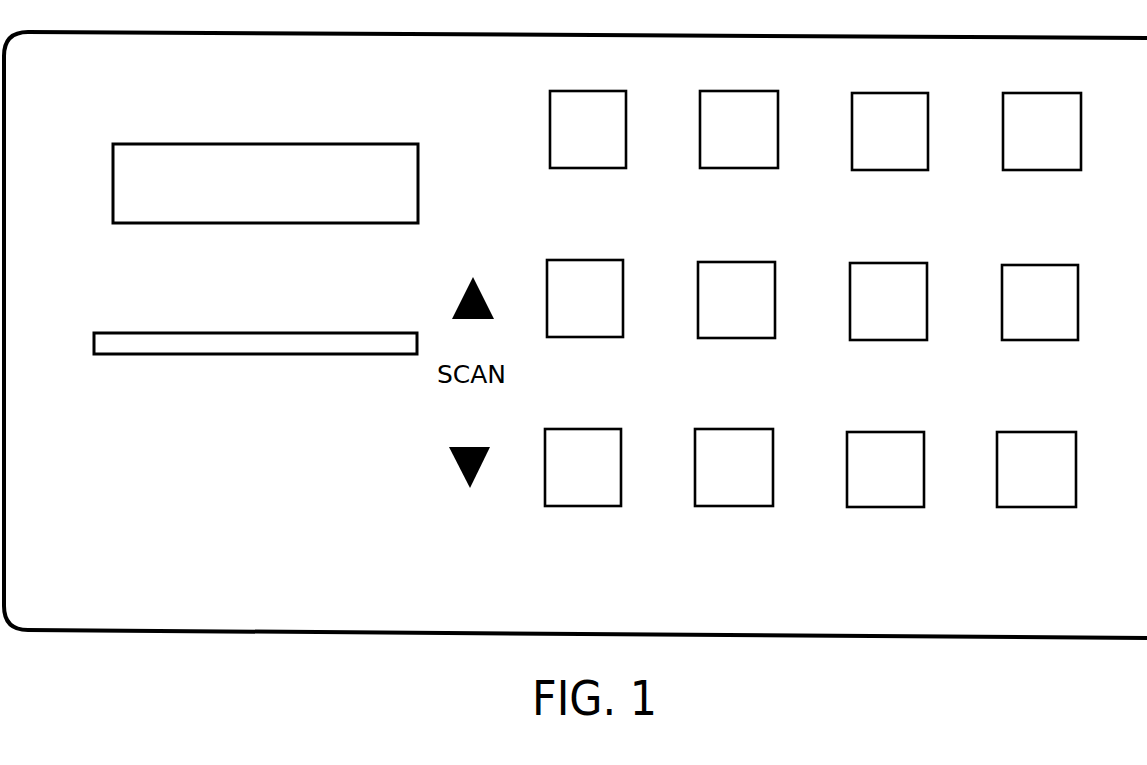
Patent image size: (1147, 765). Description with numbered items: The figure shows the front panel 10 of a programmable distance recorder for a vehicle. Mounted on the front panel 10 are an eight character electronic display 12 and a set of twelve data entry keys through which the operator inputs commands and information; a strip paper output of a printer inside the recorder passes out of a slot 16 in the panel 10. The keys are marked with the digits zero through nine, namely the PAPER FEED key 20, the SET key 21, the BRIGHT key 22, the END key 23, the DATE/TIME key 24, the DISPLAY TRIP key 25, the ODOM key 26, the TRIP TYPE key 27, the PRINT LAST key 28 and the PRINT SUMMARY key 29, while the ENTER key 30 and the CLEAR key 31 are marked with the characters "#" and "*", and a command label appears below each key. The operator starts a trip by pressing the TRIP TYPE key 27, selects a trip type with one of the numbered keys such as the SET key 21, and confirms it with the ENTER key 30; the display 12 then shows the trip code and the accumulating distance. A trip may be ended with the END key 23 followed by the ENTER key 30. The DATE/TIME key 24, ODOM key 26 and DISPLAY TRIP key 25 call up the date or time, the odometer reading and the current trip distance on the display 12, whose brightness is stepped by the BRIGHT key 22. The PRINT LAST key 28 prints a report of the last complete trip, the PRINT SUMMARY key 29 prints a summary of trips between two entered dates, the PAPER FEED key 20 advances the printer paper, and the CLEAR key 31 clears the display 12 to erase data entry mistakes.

The front panel 10 is at (610, 33).
The electronic display 12 is at (272, 143).
The slot 16 is at (303, 355).
The PAPER FEED key 20 is at (1018, 430).
The SET key 21 is at (588, 89).
The BRIGHT key 22 is at (740, 88).
The END key 23 is at (890, 92).
The DATE/TIME key 24 is at (568, 260).
The DISPLAY TRIP key 25 is at (718, 260).
The ODOM key 26 is at (870, 261).
The TRIP TYPE key 27 is at (565, 428).
The PRINT LAST key 28 is at (716, 428).
The PRINT SUMMARY key 29 is at (868, 430).
The ENTER key 30 is at (1043, 92).
The CLEAR key 31 is at (1022, 265).